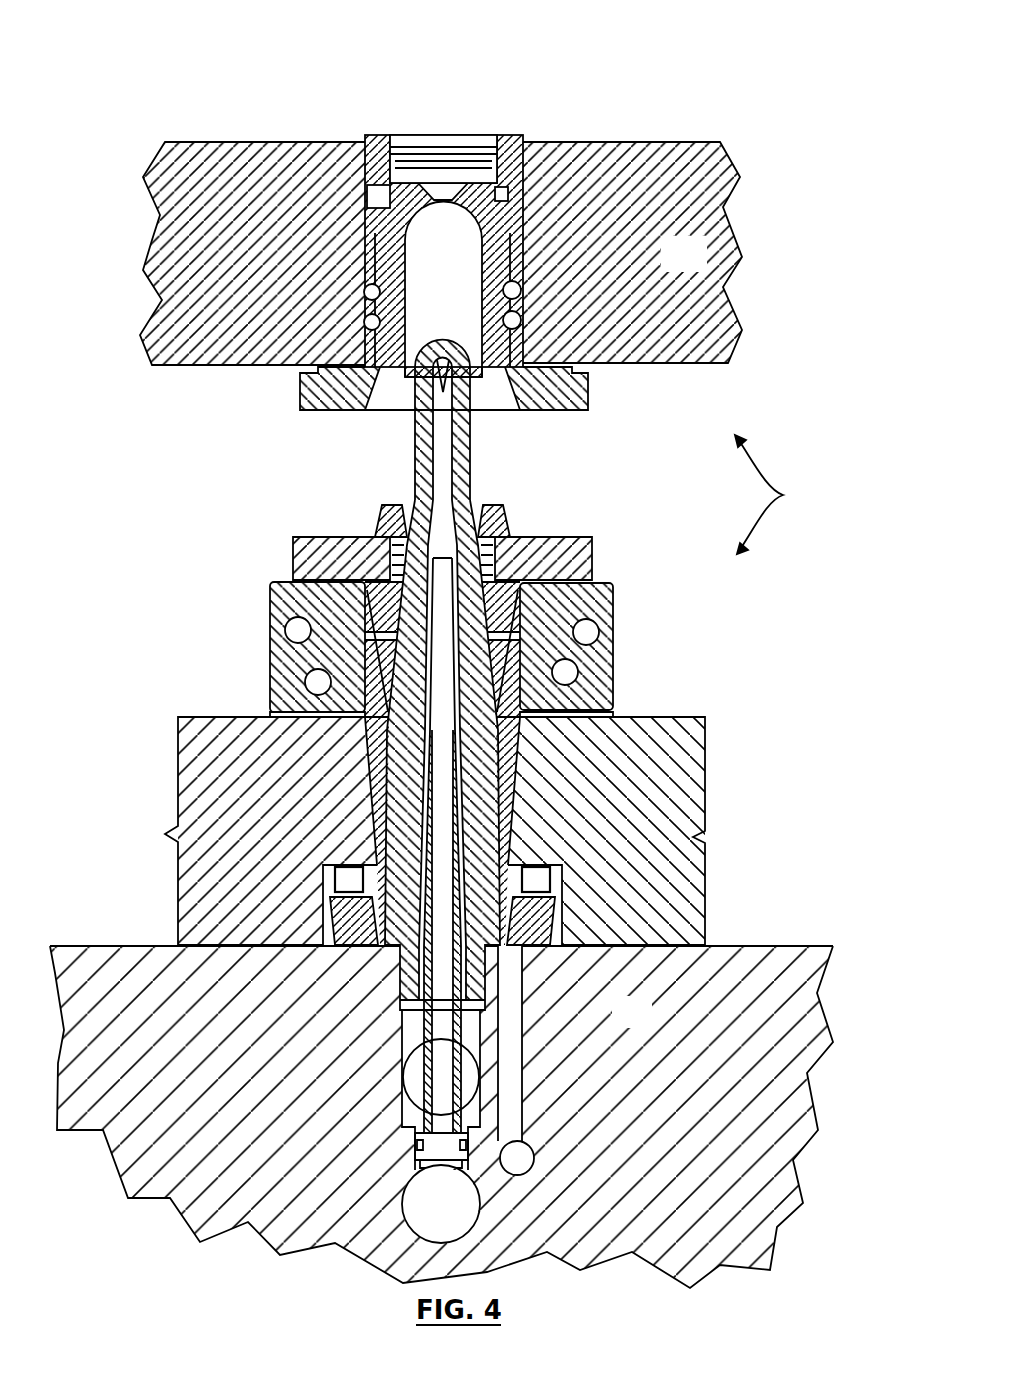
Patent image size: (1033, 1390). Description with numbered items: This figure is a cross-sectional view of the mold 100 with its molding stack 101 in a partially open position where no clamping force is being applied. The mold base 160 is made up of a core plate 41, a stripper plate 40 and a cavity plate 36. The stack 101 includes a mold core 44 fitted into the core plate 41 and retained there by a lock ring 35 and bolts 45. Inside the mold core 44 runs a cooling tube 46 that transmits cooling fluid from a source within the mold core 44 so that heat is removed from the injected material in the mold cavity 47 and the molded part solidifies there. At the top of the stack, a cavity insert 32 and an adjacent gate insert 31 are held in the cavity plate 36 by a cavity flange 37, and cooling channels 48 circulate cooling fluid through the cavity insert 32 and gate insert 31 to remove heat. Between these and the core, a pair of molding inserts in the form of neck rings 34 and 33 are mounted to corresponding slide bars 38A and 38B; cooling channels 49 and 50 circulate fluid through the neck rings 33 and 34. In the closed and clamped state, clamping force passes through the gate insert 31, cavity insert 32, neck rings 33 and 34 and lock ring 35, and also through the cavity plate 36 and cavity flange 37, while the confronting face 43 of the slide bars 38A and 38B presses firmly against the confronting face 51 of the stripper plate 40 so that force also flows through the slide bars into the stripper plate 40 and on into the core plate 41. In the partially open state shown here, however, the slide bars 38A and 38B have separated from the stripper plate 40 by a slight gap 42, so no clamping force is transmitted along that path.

The mold 100 is at (719, 51).
The molding stack 101 is at (447, 133).
The gate insert 31 is at (523, 168).
The cavity insert 32 is at (523, 245).
The mold cavity 47 is at (476, 270).
The cavity plate 36 is at (698, 268).
The cavity flange 37 is at (585, 376).
The cooling channels 48 is at (372, 322).
The mold core 44 is at (470, 448).
The cooling tube 46 is at (445, 498).
The mold base 160 is at (788, 494).
The cooling channel 49 is at (357, 554).
The cooling channel 50 is at (532, 556).
The neck ring 34 is at (372, 582).
The neck ring 33 is at (592, 565).
The slide bar 38A is at (290, 654).
The slide bar 38B is at (592, 650).
The confronting face of the stripper plate 51 is at (272, 683).
The confronting face of the slide bars 43 is at (305, 716).
The gap 42 is at (598, 714).
The stripper plate 40 is at (680, 770).
The lock ring 35 is at (508, 828).
The bolts 45 is at (342, 882).
The core plate 41 is at (643, 1025).